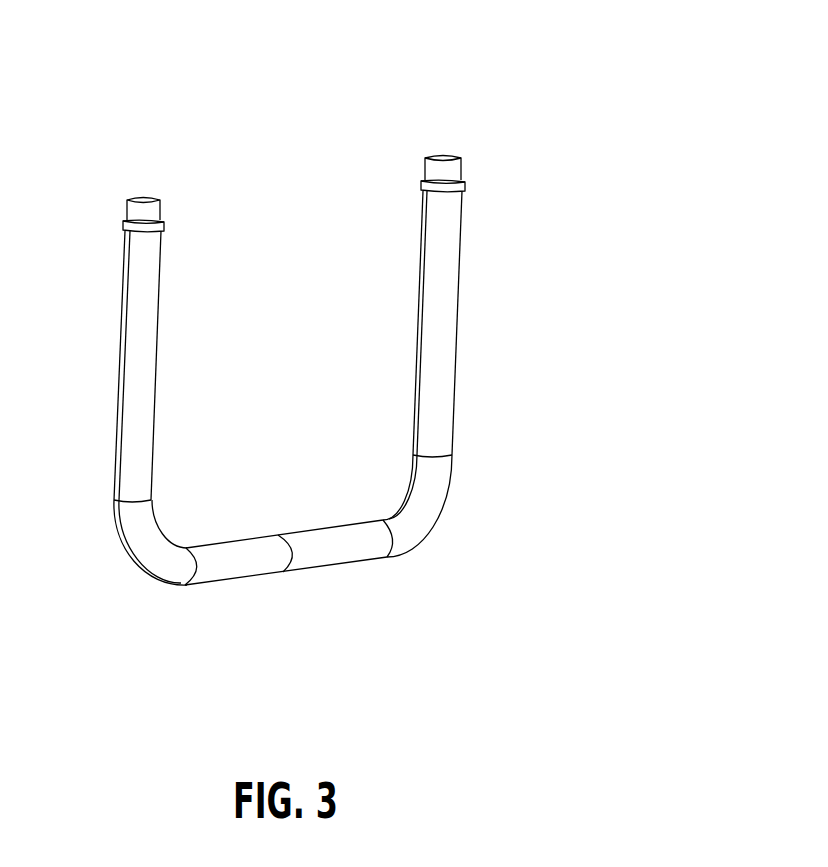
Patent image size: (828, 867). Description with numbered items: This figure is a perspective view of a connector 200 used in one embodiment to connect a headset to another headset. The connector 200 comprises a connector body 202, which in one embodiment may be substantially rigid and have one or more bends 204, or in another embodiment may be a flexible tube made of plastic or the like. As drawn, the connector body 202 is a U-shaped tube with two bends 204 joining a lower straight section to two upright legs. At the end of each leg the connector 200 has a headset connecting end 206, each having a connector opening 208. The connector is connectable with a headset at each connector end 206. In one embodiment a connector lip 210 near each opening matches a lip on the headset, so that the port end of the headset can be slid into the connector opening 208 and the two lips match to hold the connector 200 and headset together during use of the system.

The connector 200 is at (351, 86).
The connector body 202 is at (252, 537).
The bends 204 is at (139, 566).
The headset connecting ends 206 is at (104, 191).
The connector opening 208 is at (143, 198).
The connector lip 210 is at (165, 224).